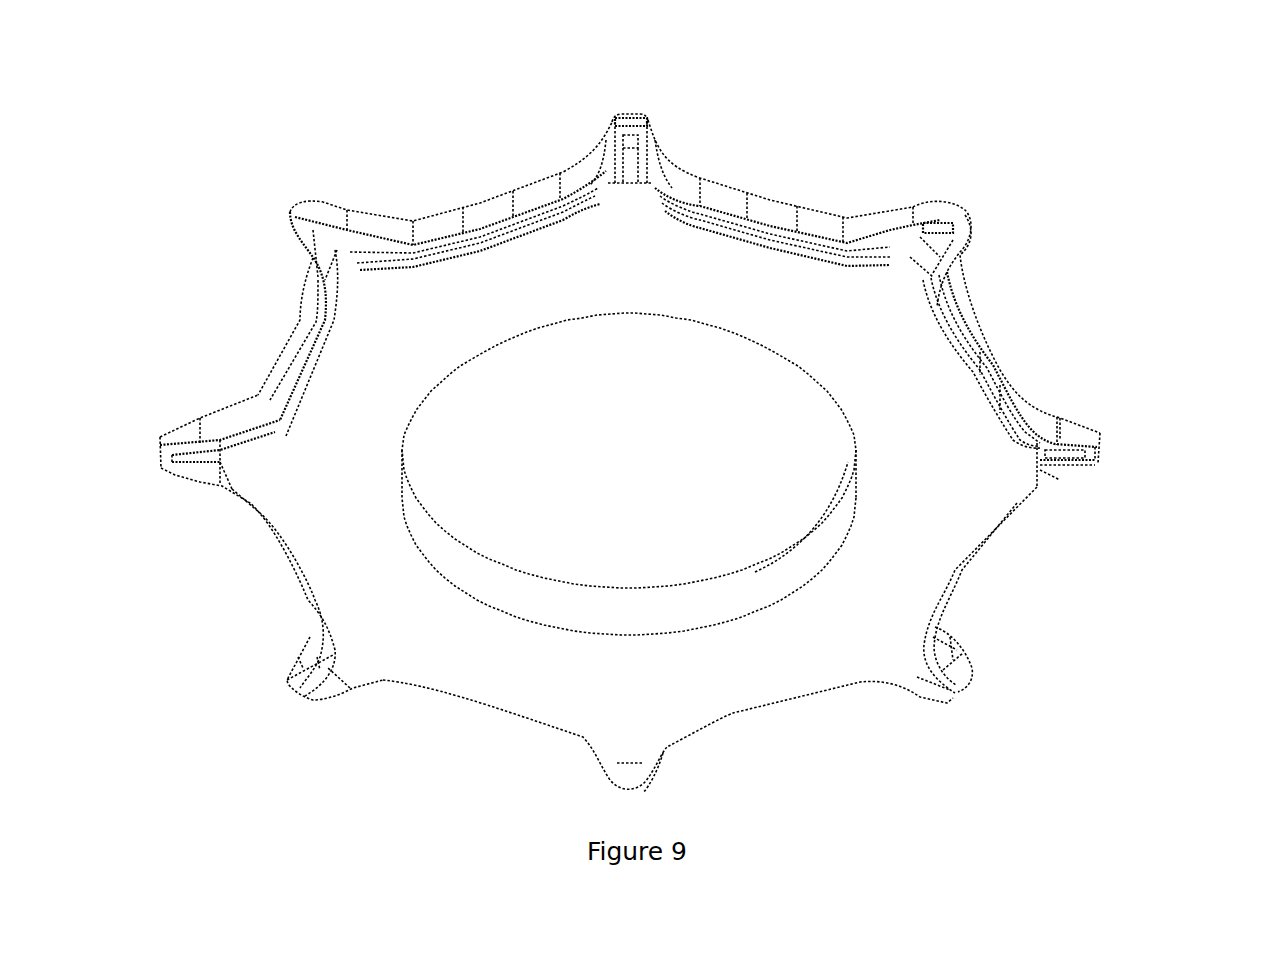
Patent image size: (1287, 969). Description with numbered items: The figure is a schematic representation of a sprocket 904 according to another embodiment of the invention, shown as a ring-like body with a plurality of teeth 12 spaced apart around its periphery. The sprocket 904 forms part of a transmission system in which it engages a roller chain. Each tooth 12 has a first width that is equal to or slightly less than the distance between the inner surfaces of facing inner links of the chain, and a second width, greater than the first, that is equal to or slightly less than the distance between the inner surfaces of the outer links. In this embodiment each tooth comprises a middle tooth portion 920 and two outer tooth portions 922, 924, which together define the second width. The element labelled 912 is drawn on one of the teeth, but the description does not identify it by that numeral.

The tooth 12 is at (611, 138).
The sprocket 904 is at (739, 267).
The left tab 912 is at (190, 422).
The middle tooth portion 920 is at (1077, 425).
The outer tooth portion 922 is at (1086, 473).
The outer tooth portion 924 is at (631, 96).